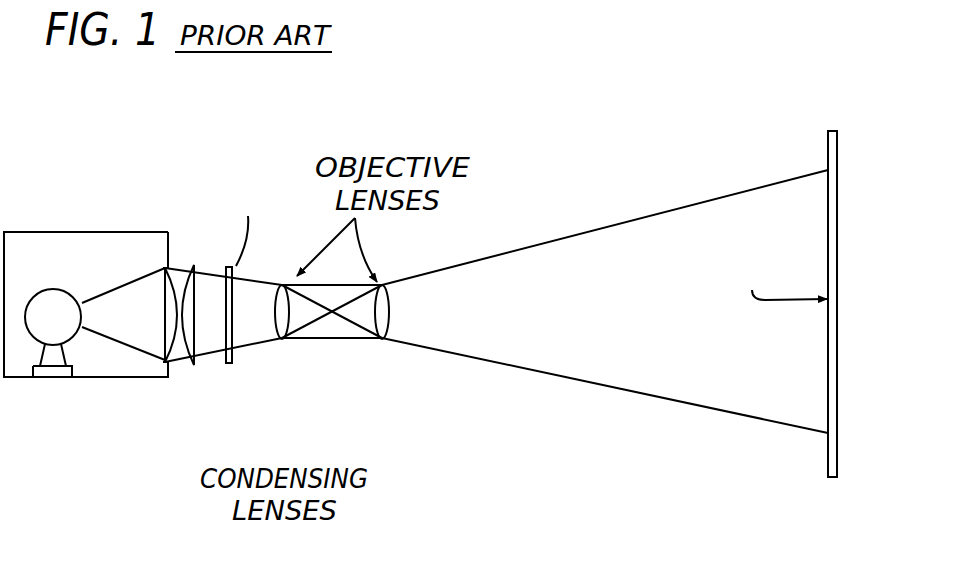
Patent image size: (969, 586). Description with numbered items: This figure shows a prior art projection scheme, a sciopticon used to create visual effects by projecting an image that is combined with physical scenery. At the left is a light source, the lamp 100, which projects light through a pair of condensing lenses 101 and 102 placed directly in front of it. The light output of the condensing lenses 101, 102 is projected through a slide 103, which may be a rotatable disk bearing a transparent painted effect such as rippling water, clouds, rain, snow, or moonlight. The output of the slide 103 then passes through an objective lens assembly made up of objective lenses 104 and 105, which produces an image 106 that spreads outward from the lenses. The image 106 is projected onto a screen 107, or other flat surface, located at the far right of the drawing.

The lamp 100 is at (25, 232).
The condensing lens 101 is at (180, 265).
The condensing lens 102 is at (190, 365).
The slide 103 is at (228, 362).
The objective lens 104 is at (282, 338).
The objective lens 105 is at (382, 338).
The image 106 is at (603, 227).
The screen 107 is at (828, 450).